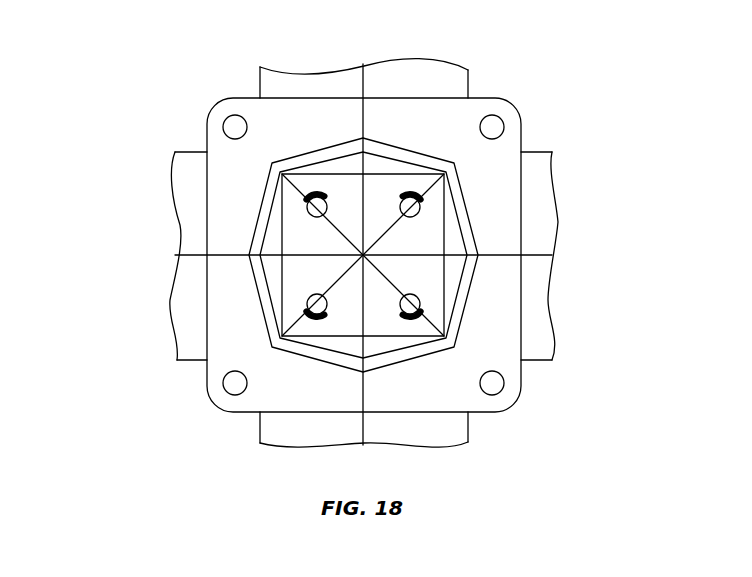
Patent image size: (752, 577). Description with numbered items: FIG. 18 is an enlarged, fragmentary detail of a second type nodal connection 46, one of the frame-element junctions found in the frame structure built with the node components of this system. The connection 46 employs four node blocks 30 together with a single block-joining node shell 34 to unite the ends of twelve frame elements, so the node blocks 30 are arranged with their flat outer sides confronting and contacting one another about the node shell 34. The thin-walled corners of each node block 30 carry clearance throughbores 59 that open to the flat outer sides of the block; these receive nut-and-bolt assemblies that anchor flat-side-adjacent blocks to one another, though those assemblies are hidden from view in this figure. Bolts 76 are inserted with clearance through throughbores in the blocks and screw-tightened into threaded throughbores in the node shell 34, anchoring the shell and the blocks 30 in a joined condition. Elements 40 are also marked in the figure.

The node block 30 is at (312, 112).
The node shell 34 is at (416, 145).
The flange 40 is at (270, 83).
The nodal connection 46 is at (120, 206).
The clearance throughbores 59 is at (228, 117).
The bolts 76 is at (323, 208).